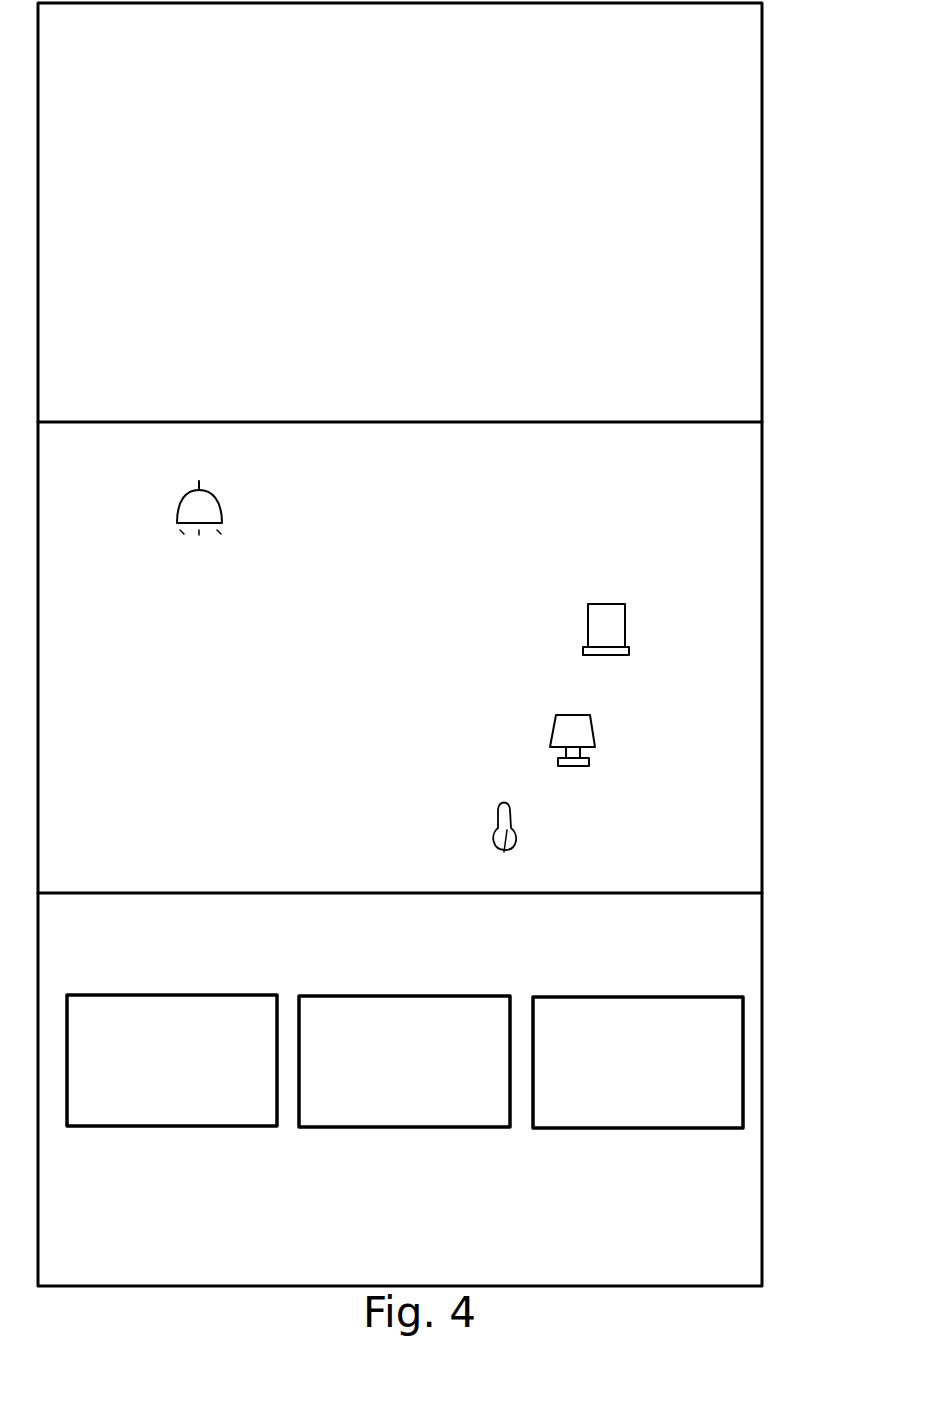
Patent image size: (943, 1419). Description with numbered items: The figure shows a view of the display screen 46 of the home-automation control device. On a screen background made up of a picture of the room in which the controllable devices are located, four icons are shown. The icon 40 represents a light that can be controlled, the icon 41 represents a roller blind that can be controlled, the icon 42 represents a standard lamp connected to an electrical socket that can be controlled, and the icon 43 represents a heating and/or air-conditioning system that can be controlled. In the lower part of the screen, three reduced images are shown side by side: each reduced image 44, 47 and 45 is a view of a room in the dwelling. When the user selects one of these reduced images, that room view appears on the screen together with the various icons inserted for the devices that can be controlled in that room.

The icon representing a light 40 is at (214, 503).
The icon representing a roller blind 41 is at (610, 604).
The icon representing a standard lamp 42 is at (589, 738).
The icon representing a heating and/or air-conditioning system 43 is at (508, 836).
The reduced image 44 is at (172, 1060).
The reduced image 45 is at (638, 1062).
The user interface screen 46 is at (763, 1204).
The reduced image 47 is at (404, 1061).